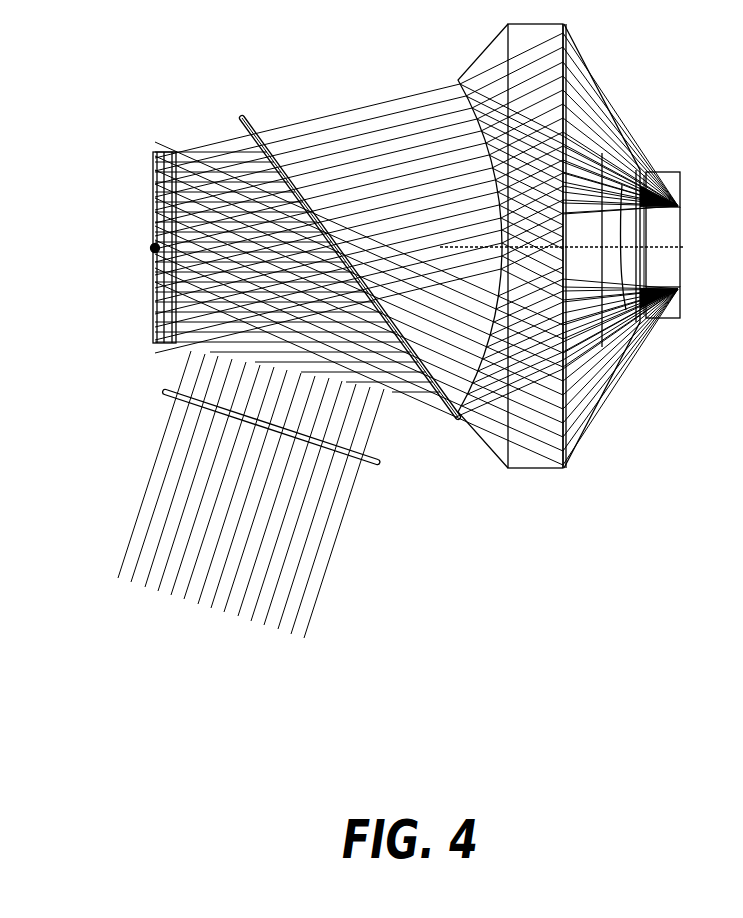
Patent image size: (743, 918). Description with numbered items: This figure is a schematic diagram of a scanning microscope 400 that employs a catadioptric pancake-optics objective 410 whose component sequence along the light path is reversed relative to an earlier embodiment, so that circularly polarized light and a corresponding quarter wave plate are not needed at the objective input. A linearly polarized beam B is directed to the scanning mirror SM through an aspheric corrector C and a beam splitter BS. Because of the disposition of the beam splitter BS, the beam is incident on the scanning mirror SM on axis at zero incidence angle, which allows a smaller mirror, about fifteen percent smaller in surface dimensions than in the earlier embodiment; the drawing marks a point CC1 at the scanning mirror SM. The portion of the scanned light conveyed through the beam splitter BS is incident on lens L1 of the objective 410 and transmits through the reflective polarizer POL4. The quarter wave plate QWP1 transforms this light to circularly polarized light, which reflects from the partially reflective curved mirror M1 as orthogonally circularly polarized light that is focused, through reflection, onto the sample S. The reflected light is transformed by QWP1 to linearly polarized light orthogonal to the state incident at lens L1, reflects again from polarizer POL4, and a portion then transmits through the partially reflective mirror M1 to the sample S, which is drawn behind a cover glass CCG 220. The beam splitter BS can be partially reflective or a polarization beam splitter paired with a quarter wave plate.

The scanning microscope 400 is at (186, 67).
The catadioptric objective 410 is at (408, 56).
The scanning mirror SM is at (152, 165).
The center of curvature CC1 is at (150, 250).
The beam B is at (150, 483).
The aspheric corrector C is at (165, 395).
The beam splitter BS is at (437, 405).
The lens L1 is at (485, 442).
The reflective polarizer POL4 is at (500, 457).
The quarter wave plate QWP1 is at (565, 420).
The partially reflective curved mirror M1 is at (577, 398).
The sample S is at (668, 175).
The cover glass CCG is at (650, 318).
The cover glass 220 is at (678, 296).